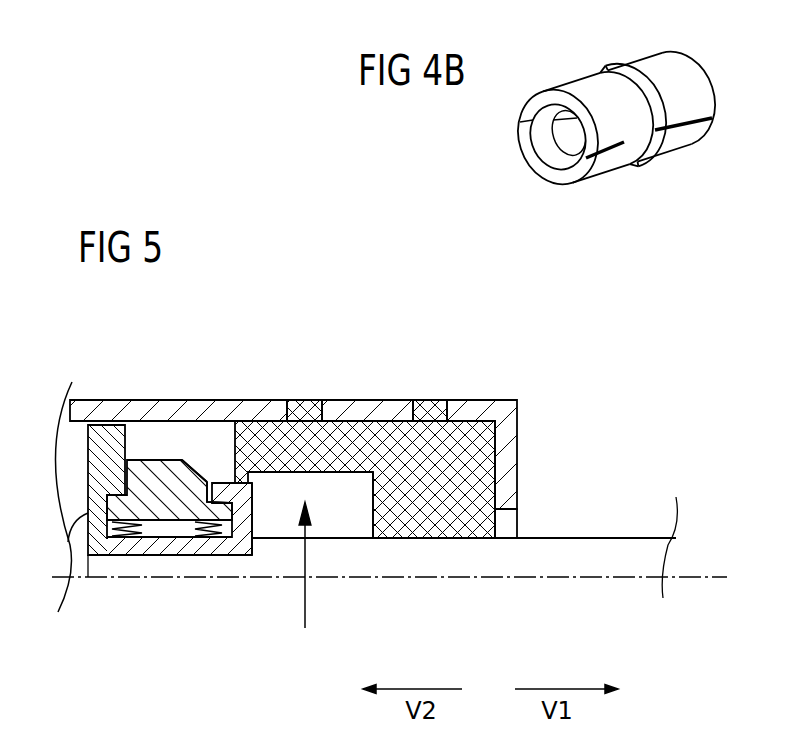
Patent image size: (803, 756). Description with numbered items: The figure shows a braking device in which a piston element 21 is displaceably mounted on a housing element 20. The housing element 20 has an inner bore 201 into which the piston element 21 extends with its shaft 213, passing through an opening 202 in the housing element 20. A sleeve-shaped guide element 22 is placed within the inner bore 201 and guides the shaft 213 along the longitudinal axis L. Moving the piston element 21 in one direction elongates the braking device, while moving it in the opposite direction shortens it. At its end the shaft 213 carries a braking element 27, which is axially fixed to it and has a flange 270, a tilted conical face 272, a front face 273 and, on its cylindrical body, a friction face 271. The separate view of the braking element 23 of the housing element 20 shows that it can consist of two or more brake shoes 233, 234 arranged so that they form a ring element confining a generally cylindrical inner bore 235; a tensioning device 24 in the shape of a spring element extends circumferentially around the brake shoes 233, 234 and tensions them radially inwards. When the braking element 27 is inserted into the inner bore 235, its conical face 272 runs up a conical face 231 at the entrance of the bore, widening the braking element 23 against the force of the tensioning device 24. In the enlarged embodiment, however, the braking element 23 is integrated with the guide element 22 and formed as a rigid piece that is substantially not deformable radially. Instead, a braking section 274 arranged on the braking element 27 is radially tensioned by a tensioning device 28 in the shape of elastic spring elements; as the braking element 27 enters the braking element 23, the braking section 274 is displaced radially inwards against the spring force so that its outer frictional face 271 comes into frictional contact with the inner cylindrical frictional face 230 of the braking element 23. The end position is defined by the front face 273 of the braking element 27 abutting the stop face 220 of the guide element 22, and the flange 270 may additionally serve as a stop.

In FIG. 5, the housing element 20 is at (500, 412).
In FIG. 5, the inner bore 201 is at (146, 438).
In FIG. 5, the opening 202 is at (546, 490).
In FIG. 5, the piston element 21 is at (633, 558).
In FIG. 5, the shaft 213 is at (587, 563).
In FIG. 5, the guide element 22 is at (449, 420).
In FIG. 5, the stop face 220 is at (326, 563).
In FIG. 4B, the braking element 23 is at (600, 193).
In FIG. 5, the braking element 23 is at (338, 428).
In FIG. 5, the inner cylindrical frictional face 230 is at (352, 480).
In FIG. 5, the conical face 231 is at (267, 418).
In FIG. 4B, the brake shoe 233 is at (683, 75).
In FIG. 4B, the brake shoe 234 is at (705, 133).
In FIG. 4B, the inner bore 235 is at (568, 145).
In FIG. 5, the inner bore 235 is at (311, 579).
In FIG. 4B, the tensioning device 24 is at (611, 66).
In FIG. 5, the braking element 27 is at (100, 556).
In FIG. 5, the flange 270 is at (82, 402).
In FIG. 5, the friction face 271 is at (174, 455).
In FIG. 5, the conical face 272 is at (201, 468).
In FIG. 5, the front face 273 is at (271, 585).
In FIG. 5, the braking section 274 is at (182, 457).
In FIG. 5, the tensioning device 28 is at (130, 541).
In FIG. 5, the longitudinal axis L is at (692, 579).